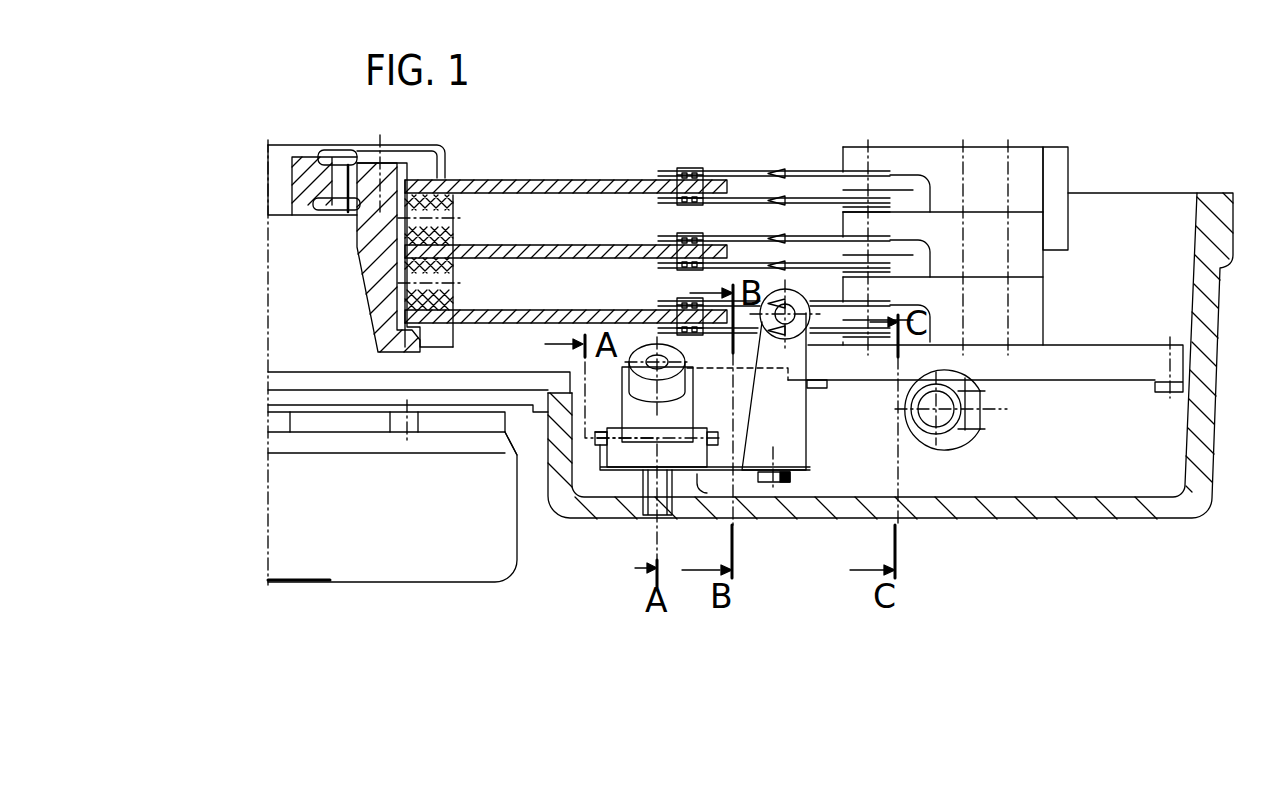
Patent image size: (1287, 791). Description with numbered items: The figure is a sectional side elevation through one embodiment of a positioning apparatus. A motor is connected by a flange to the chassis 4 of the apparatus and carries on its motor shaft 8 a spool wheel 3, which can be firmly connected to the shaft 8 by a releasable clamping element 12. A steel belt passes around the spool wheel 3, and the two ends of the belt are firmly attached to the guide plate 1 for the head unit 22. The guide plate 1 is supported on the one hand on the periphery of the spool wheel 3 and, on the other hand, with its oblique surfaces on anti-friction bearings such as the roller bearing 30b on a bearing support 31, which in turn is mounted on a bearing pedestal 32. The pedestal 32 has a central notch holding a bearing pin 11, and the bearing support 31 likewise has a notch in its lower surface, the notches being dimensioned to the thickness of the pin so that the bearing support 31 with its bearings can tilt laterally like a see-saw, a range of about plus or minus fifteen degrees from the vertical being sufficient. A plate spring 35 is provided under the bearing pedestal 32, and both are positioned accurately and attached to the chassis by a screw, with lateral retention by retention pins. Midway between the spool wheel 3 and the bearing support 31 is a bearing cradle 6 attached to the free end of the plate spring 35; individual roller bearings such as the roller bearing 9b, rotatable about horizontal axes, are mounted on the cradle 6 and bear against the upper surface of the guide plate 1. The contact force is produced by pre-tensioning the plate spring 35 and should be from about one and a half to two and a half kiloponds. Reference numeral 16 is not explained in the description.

The guide plate 1 is at (1157, 360).
The spool wheel 3 is at (950, 427).
The chassis 4 is at (1087, 508).
The bearing cradle 6 is at (800, 425).
The motor shaft 8 is at (975, 428).
The roller bearing 9b is at (808, 312).
The bearing pin 11 is at (603, 442).
The releasable clamping element 12 is at (980, 392).
The lever pivot head 16 is at (806, 303).
The head unit 22 is at (1037, 173).
The roller bearing 30b is at (638, 353).
The bearing support 31 is at (640, 432).
The bearing pedestal 32 is at (618, 468).
The plate spring 35 is at (736, 472).